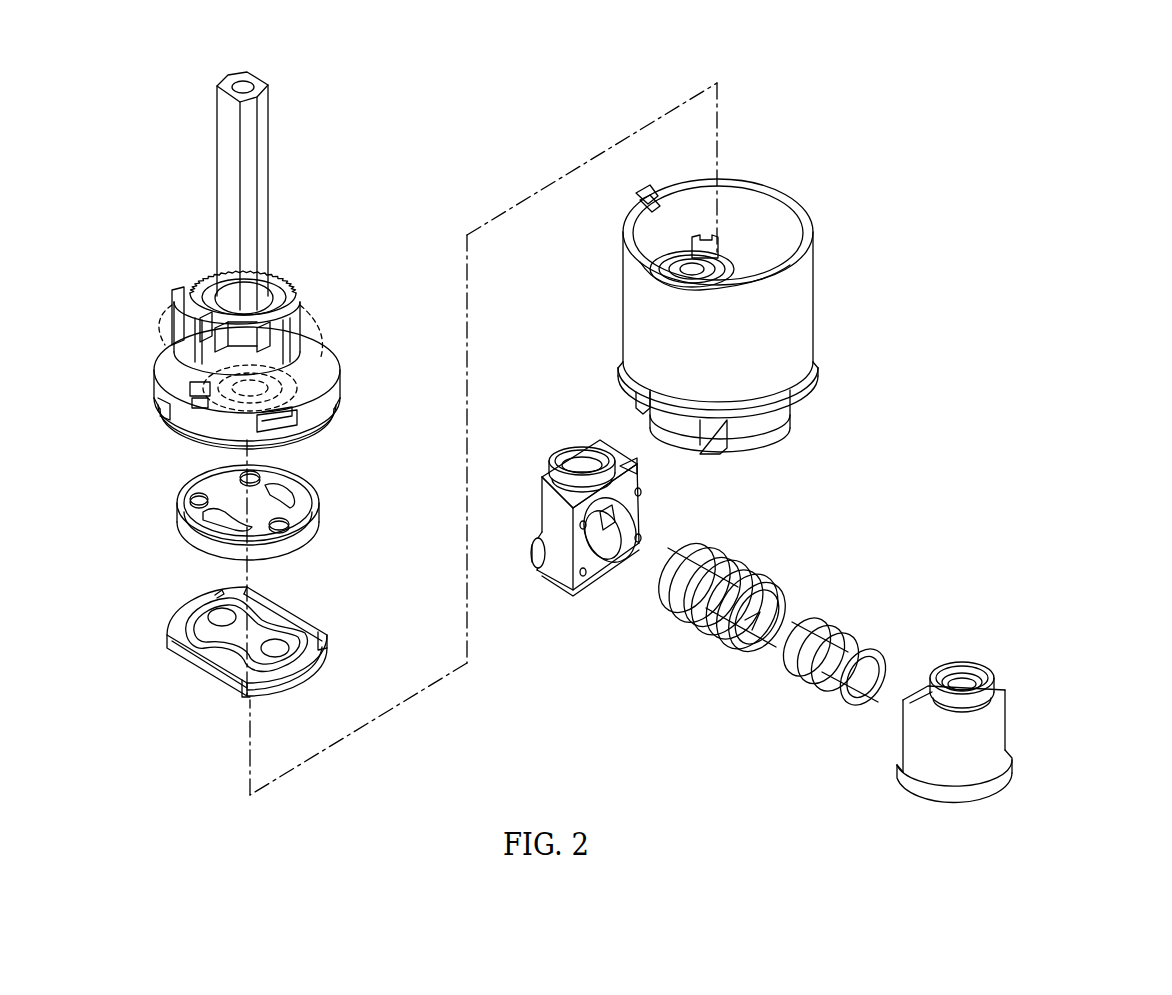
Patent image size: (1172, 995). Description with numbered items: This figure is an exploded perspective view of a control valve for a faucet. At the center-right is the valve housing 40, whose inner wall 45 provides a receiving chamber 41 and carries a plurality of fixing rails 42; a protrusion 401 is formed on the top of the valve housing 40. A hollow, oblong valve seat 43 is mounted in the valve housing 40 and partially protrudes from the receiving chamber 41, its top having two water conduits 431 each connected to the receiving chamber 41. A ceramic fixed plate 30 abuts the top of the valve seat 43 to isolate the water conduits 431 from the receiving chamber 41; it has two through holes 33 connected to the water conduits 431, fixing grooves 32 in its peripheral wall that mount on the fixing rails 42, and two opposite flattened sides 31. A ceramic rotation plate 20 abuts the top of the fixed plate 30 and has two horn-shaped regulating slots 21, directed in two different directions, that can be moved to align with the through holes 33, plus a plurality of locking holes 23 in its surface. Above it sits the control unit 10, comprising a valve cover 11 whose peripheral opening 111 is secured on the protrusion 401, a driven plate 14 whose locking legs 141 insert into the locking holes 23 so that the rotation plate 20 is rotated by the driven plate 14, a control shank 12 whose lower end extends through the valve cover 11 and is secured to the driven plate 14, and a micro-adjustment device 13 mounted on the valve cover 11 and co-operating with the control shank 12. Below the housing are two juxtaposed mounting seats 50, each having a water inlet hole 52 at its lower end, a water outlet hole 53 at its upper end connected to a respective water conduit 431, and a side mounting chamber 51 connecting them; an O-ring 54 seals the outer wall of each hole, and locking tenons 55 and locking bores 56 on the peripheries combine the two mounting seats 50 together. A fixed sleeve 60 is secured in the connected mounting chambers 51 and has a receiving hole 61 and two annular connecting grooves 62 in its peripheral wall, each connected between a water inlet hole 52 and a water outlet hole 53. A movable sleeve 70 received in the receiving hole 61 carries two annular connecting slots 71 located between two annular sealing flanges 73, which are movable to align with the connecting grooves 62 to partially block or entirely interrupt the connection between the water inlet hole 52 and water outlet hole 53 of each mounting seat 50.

The control unit 10 is at (205, 195).
The valve cover 11 is at (230, 365).
The opening 111 is at (178, 325).
The control shank 12 is at (258, 183).
The micro-adjustment device 13 is at (300, 292).
The driven plate 14 is at (330, 395).
The locking legs 141 is at (165, 420).
The rotation plate 20 is at (259, 521).
The regulating slots 21 is at (205, 525).
The locking holes 23 is at (168, 503).
The fixed plate 30 is at (262, 664).
The flattened sides 31 is at (295, 615).
The fixing grooves 32 is at (330, 633).
The through holes 33 is at (200, 632).
The valve housing 40 is at (751, 288).
The protrusion 401 is at (635, 200).
The receiving chamber 41 is at (765, 222).
The fixing rails 42 is at (693, 265).
The valve seat 43 is at (735, 270).
The water conduits 431 is at (693, 272).
The inner wall 45 is at (740, 215).
The mounting seats 50 is at (803, 610).
The mounting chamber 51 is at (625, 520).
The water inlet hole 52 is at (598, 553).
The water outlet hole 53 is at (585, 455).
The O-ring 54 is at (575, 500).
The locking tenons 55 is at (632, 480).
The locking bores 56 is at (548, 598).
The fixed sleeve 60 is at (722, 594).
The receiving hole 61 is at (762, 592).
The connecting grooves 62 is at (690, 605).
The movable sleeve 70 is at (831, 674).
The connecting slots 71 is at (815, 628).
The sealing flanges 73 is at (790, 660).